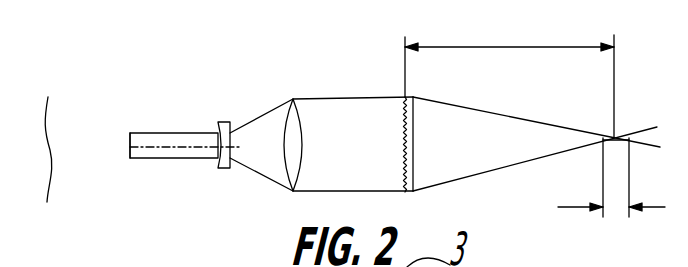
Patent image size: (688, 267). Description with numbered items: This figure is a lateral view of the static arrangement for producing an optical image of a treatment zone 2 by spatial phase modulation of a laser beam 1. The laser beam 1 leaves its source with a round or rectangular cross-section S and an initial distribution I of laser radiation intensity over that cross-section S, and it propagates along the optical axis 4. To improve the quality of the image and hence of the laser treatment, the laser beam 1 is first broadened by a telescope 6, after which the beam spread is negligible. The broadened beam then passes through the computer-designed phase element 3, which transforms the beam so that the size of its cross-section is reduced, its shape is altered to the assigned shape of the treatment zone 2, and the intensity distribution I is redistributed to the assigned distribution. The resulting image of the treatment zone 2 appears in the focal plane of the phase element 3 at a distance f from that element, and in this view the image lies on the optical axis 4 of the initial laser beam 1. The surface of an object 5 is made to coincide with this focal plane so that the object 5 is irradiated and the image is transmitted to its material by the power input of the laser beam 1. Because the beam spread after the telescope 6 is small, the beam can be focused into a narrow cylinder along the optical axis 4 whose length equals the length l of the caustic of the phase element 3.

The laser beam 1 is at (183, 137).
The treatment zone 2 is at (622, 142).
The computer-designed phase element 3 is at (409, 97).
The optical axis 4 is at (130, 147).
The object 5 is at (617, 101).
The telescope 6 is at (240, 108).
The beam cross-section S is at (130, 136).
The initial distribution of laser radiation intensity I is at (53, 123).
The distance to focal plane f is at (509, 49).
The length of the caustic l is at (611, 187).